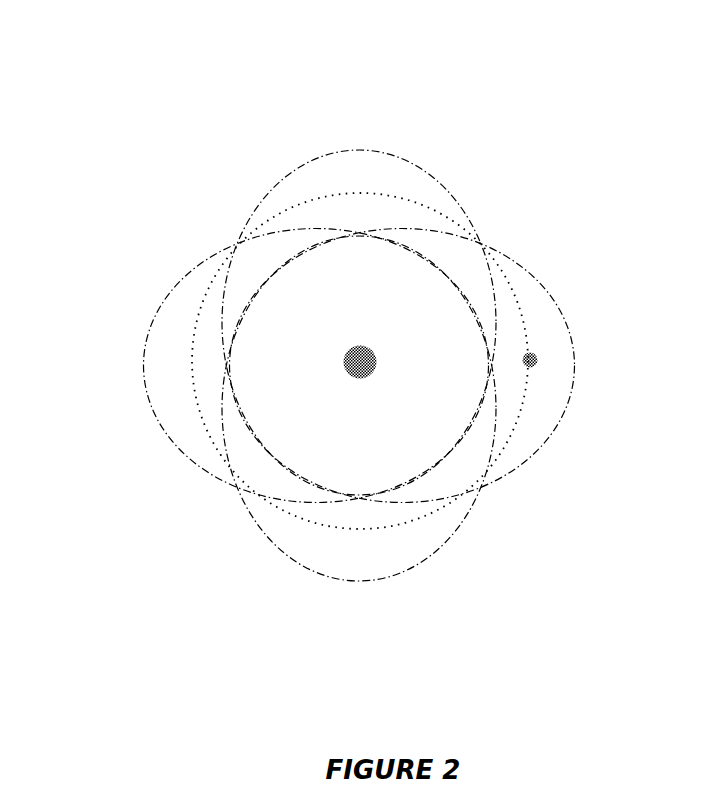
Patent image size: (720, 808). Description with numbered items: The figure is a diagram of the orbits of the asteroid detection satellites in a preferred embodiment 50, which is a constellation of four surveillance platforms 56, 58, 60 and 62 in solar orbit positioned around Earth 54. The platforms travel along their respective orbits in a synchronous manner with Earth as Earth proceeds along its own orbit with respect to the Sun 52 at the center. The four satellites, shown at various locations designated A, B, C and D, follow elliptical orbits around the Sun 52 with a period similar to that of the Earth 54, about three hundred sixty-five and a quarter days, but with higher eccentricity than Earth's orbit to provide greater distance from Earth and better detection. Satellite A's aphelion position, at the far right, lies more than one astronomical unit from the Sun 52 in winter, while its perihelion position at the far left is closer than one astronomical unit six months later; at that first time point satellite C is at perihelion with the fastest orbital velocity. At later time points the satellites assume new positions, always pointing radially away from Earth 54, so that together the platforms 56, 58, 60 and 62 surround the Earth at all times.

The preferred embodiment 50 is at (351, 305).
The Sun 52 is at (504, 295).
The Earth 54 is at (592, 337).
The surveillance platform 56 is at (451, 361).
The surveillance platform 58 is at (427, 361).
The surveillance platform 60 is at (259, 364).
The surveillance platform 62 is at (272, 413).